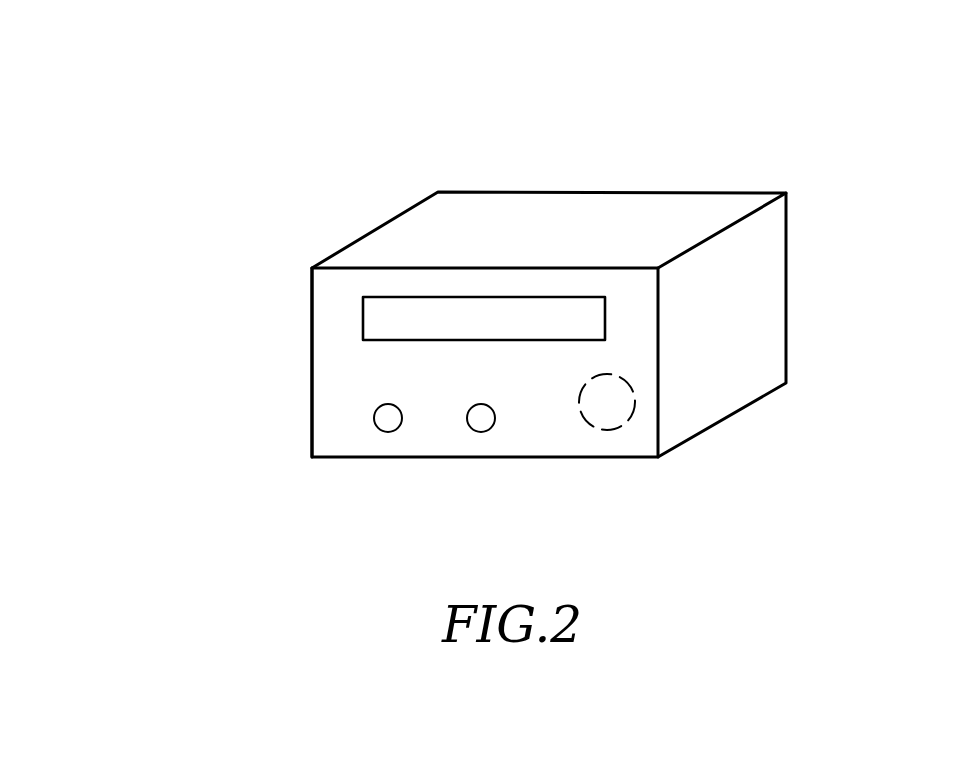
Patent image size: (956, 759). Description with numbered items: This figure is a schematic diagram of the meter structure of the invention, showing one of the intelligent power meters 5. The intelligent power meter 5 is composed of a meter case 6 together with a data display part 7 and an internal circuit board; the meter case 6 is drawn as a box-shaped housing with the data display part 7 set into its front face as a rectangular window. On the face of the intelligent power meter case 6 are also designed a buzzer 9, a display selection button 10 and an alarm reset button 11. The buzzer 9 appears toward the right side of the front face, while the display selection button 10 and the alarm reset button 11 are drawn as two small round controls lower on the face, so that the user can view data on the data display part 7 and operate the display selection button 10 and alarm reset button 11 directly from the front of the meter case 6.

The intelligent power meter 5 is at (695, 233).
The meter case 6 is at (312, 327).
The data display part 7 is at (426, 310).
The buzzer 9 is at (602, 413).
The display selection button 10 is at (475, 418).
The alarm reset button 11 is at (390, 420).